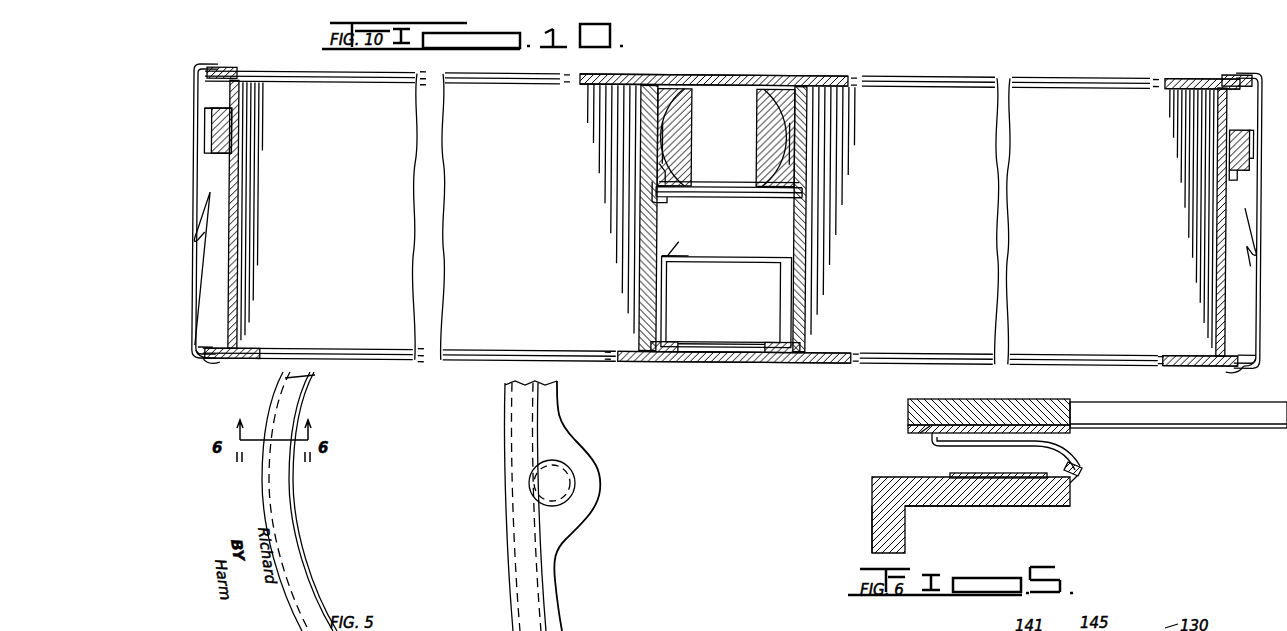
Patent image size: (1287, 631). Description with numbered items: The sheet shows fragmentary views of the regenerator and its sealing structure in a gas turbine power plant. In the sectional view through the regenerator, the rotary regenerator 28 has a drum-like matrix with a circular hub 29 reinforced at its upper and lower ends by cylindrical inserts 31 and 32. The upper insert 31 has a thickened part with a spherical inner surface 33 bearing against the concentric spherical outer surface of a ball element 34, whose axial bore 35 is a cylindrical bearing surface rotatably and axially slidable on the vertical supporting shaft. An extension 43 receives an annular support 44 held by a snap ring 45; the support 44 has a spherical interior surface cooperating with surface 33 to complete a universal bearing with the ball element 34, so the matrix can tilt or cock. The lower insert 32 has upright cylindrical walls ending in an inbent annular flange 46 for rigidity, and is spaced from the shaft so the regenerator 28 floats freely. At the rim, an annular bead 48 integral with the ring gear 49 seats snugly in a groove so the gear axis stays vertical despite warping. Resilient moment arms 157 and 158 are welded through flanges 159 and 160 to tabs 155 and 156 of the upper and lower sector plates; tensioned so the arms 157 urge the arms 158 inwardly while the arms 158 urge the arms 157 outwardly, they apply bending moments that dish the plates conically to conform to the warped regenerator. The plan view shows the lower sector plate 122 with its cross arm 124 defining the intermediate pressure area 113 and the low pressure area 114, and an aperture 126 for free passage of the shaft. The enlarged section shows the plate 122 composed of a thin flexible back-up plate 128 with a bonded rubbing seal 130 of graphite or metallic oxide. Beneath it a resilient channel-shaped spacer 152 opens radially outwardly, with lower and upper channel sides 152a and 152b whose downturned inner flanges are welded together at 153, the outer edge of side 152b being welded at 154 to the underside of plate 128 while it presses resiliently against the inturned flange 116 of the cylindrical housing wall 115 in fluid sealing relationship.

In FIG. 10, the rotary regenerator 28 is at (1052, 93).
In FIG. 10, the hub 29 is at (807, 227).
In FIG. 10, the upper cylindrical insert 31 is at (702, 197).
In FIG. 10, the lower cylindrical insert 32 is at (670, 288).
In FIG. 10, the spherical inner surface 33 is at (668, 113).
In FIG. 10, the ball element 34 is at (672, 134).
In FIG. 10, the axial bore 35 is at (697, 172).
In FIG. 10, the extension 43 is at (661, 160).
In FIG. 10, the annular support 44 is at (658, 186).
In FIG. 10, the snap ring 45 is at (658, 198).
In FIG. 10, the inbent annular flange 46 is at (678, 239).
In FIG. 10, the annular bead 48 is at (232, 138).
In FIG. 10, the ring gear 49 is at (232, 145).
In FIG. 5, the intermediate pressure area 113 is at (425, 517).
In FIG. 6, the intermediate pressure area 113 is at (1073, 506).
In FIG. 5, the low pressure area 114 is at (658, 578).
In FIG. 6, the cylindrical vertical housing wall 115 is at (900, 540).
In FIG. 6, the inturned flange 116 is at (983, 505).
In FIG. 5, the lower sector plate 122 is at (318, 594).
In FIG. 6, the lower sector plate 122 is at (1078, 418).
In FIG. 5, the cross arm 124 is at (558, 397).
In FIG. 5, the aperture 126 is at (568, 476).
In FIG. 6, the back-up plate 128 is at (910, 429).
In FIG. 5, the rubbing seal 130 is at (310, 400).
In FIG. 6, the rubbing seal 130 is at (1008, 399).
In FIG. 6, the channel-shaped spacer 152 is at (972, 443).
In FIG. 6, the lower channel side 152a is at (1078, 478).
In FIG. 6, the upper channel side 152b is at (1082, 452).
In FIG. 6, the weld 153 is at (1074, 474).
In FIG. 6, the weld 154 is at (930, 434).
In FIG. 10, the tab 155 is at (196, 72).
In FIG. 10, the tab 156 is at (205, 360).
In FIG. 10, the upper moment arm 157 is at (199, 156).
In FIG. 10, the lower moment arm 158 is at (197, 290).
In FIG. 10, the upper flange 159 is at (228, 70).
In FIG. 10, the radial flange 160 is at (217, 364).